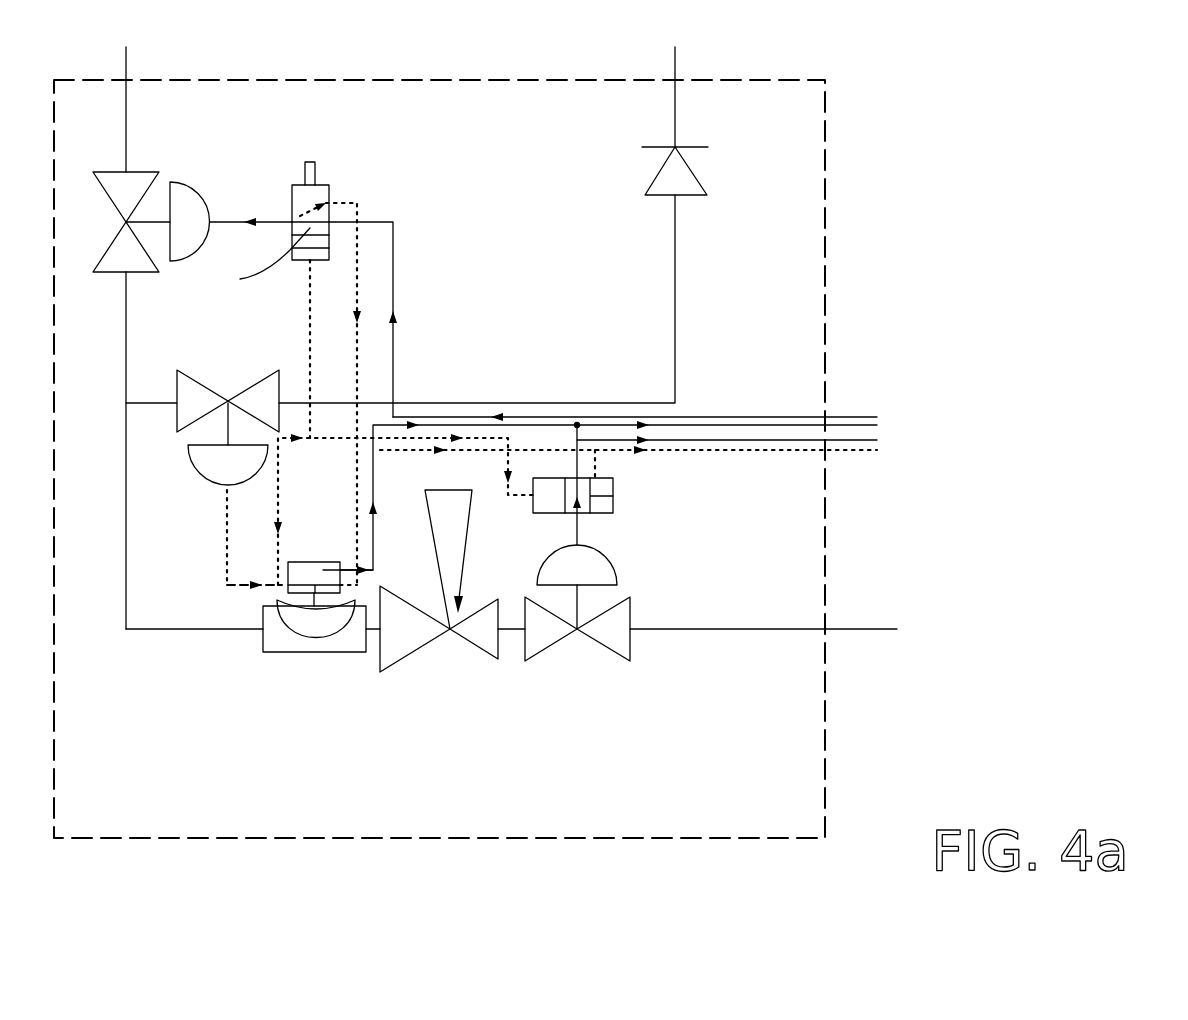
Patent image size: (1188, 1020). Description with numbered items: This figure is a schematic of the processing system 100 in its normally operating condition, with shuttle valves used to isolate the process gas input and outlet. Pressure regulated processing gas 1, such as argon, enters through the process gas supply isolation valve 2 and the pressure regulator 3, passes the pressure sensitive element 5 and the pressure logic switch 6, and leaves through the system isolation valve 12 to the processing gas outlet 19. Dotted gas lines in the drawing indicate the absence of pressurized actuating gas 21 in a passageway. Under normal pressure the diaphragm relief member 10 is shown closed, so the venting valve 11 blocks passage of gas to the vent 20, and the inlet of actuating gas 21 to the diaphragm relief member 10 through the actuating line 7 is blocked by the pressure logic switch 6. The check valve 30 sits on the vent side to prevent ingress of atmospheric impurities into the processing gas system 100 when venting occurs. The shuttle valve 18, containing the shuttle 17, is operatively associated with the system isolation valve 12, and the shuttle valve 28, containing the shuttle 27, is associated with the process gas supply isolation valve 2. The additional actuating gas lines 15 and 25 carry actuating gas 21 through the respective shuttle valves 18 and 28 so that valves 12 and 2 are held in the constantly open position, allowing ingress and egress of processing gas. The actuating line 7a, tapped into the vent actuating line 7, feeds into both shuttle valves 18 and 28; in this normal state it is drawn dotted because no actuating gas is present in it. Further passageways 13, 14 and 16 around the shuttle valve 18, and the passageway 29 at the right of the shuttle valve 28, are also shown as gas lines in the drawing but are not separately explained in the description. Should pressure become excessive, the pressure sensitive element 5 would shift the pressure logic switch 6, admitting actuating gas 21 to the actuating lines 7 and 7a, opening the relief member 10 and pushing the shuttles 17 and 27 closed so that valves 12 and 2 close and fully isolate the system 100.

The processing gas 1 is at (868, 628).
The process gas supply isolation valve 2 is at (612, 650).
The pressure regulator 3 is at (427, 643).
The pressure sensitive element 5 is at (314, 626).
The pressure logic switch 6 is at (322, 570).
The actuating line 7 is at (233, 590).
The actuating line 7a is at (278, 500).
The diaphragm relief member 10 is at (203, 480).
The venting valve 11 is at (258, 382).
The system isolation valve 12 is at (110, 246).
The line 13 is at (278, 220).
The signal line 14 is at (310, 298).
The actuating gas line 15 is at (393, 248).
The signal line 16 is at (360, 202).
The shuttle 17 is at (256, 267).
The shuttle valve 18 is at (329, 187).
The processing gas outlet 19 is at (146, 109).
The vent 20 is at (644, 93).
The actuating gas 21 is at (394, 346).
The actuating gas line 25 is at (678, 440).
The shuttle 27 is at (568, 513).
The shuttle valve 28 is at (598, 513).
The signal line 29 is at (833, 450).
The check valve 30 is at (663, 197).
The processing system 100 is at (823, 267).